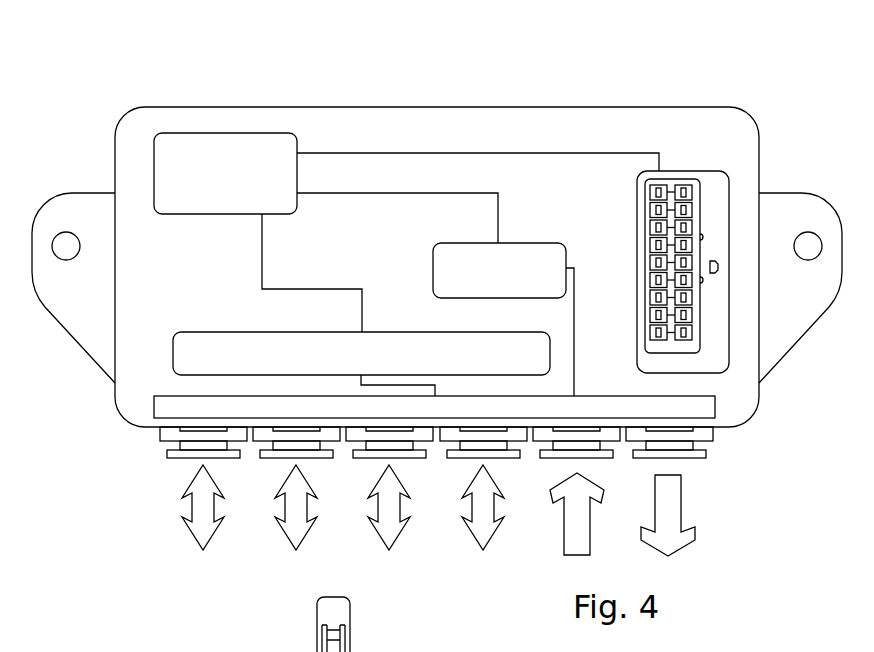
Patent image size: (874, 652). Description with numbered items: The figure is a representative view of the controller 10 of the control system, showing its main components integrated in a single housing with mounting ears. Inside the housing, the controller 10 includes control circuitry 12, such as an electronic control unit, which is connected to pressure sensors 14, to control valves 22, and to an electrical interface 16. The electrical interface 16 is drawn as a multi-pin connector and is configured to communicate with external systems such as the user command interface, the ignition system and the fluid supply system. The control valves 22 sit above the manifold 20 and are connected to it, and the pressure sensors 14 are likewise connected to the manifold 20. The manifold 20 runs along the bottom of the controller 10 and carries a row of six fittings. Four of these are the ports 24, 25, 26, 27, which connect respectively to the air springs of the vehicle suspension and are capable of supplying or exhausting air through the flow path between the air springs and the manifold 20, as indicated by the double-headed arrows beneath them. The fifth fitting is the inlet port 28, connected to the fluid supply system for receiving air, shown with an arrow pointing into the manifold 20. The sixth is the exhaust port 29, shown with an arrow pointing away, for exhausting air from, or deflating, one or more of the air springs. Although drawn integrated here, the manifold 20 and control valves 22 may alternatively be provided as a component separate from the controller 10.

The controller 10 is at (266, 48).
The control circuitry 12 is at (190, 214).
The pressure sensors 14 is at (530, 243).
The electrical interface 16 is at (677, 171).
The manifold 20 is at (597, 396).
The control valves 22 is at (219, 332).
The port 24 is at (182, 460).
The port 25 is at (275, 460).
The port 26 is at (368, 460).
The port 27 is at (462, 460).
The inlet port 28 is at (555, 460).
The exhaust port 29 is at (648, 460).